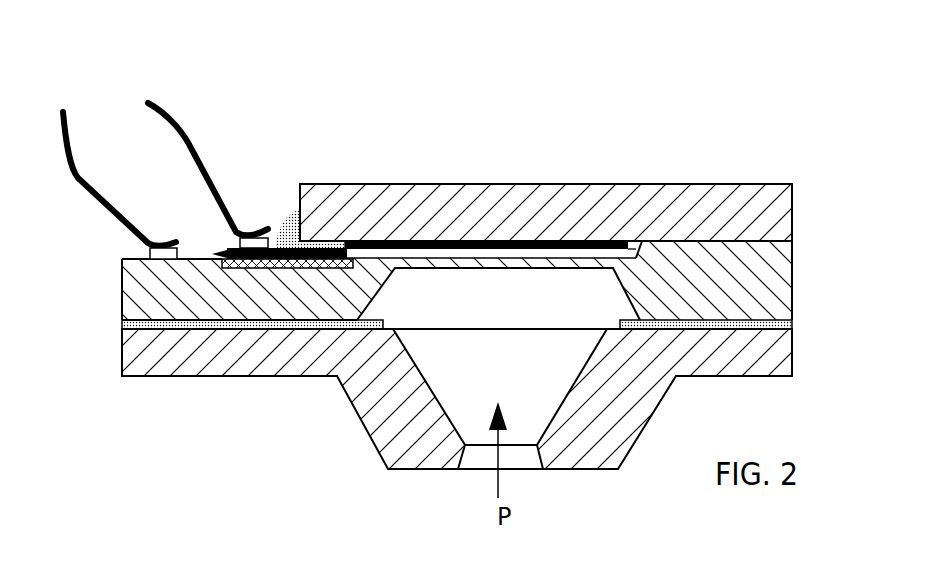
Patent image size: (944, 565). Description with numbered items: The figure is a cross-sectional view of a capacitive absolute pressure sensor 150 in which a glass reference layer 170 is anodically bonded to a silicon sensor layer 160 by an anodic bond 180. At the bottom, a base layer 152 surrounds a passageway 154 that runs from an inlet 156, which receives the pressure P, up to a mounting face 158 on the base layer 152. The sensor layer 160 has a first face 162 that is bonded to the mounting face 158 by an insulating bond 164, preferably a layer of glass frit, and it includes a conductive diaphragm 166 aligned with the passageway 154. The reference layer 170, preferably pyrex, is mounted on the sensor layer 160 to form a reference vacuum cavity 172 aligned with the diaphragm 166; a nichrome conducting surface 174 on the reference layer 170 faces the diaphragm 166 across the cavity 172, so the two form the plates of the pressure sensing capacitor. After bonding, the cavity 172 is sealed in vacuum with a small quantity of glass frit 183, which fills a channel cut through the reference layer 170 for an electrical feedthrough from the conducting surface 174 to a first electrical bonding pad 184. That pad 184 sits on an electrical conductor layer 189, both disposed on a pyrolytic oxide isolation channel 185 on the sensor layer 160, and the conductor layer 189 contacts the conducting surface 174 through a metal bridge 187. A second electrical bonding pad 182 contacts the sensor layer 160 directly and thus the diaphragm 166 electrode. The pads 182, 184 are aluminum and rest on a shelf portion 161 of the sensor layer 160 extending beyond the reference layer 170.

The pressure sensor 150 is at (765, 90).
The base layer 152 is at (785, 360).
The passageway 154 is at (518, 388).
The inlet 156 is at (543, 470).
The mounting face 158 is at (394, 330).
The sensor layer 160 is at (775, 283).
The shelf portion 161 is at (279, 295).
The first face 162 is at (145, 304).
The insulating bond 164 is at (133, 324).
The conductive diaphragm 166 is at (548, 263).
The reference layer 170 is at (728, 200).
The reference vacuum cavity 172 is at (590, 252).
The conducting surface 174 is at (493, 242).
The anodic bond 180 is at (786, 238).
The second electrical bonding pad 182 is at (150, 254).
The glass frit 183 is at (290, 213).
The first electrical bonding pad 184 is at (232, 243).
The isolation channel 185 is at (313, 262).
The metal bridge 187 is at (352, 247).
The electrical conductor layer 189 is at (223, 258).